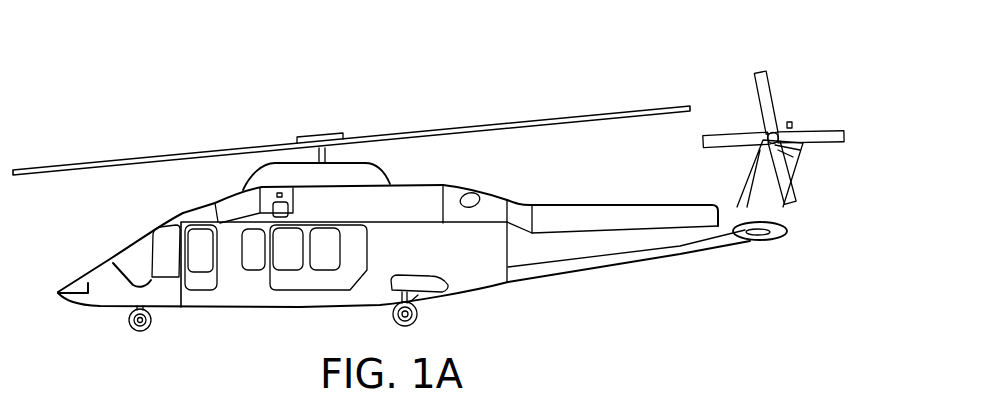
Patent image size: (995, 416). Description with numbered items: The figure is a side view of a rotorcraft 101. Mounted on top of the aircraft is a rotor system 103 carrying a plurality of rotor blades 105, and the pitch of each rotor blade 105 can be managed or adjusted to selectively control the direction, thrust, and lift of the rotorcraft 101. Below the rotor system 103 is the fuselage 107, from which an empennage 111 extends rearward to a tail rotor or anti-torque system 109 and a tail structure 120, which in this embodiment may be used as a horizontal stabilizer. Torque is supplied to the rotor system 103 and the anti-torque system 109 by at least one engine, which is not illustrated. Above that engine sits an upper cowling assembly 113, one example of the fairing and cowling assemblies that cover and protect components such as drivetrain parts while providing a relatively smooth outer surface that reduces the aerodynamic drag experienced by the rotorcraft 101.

The rotorcraft 101 is at (208, 80).
The rotor system 103 is at (333, 122).
The rotor blades 105 is at (155, 157).
The fuselage 107 is at (253, 307).
The tail rotor or anti-torque system 109 is at (797, 110).
The empennage 111 is at (643, 260).
The upper cowling assembly 113 is at (373, 177).
The tail structure 120 is at (758, 238).